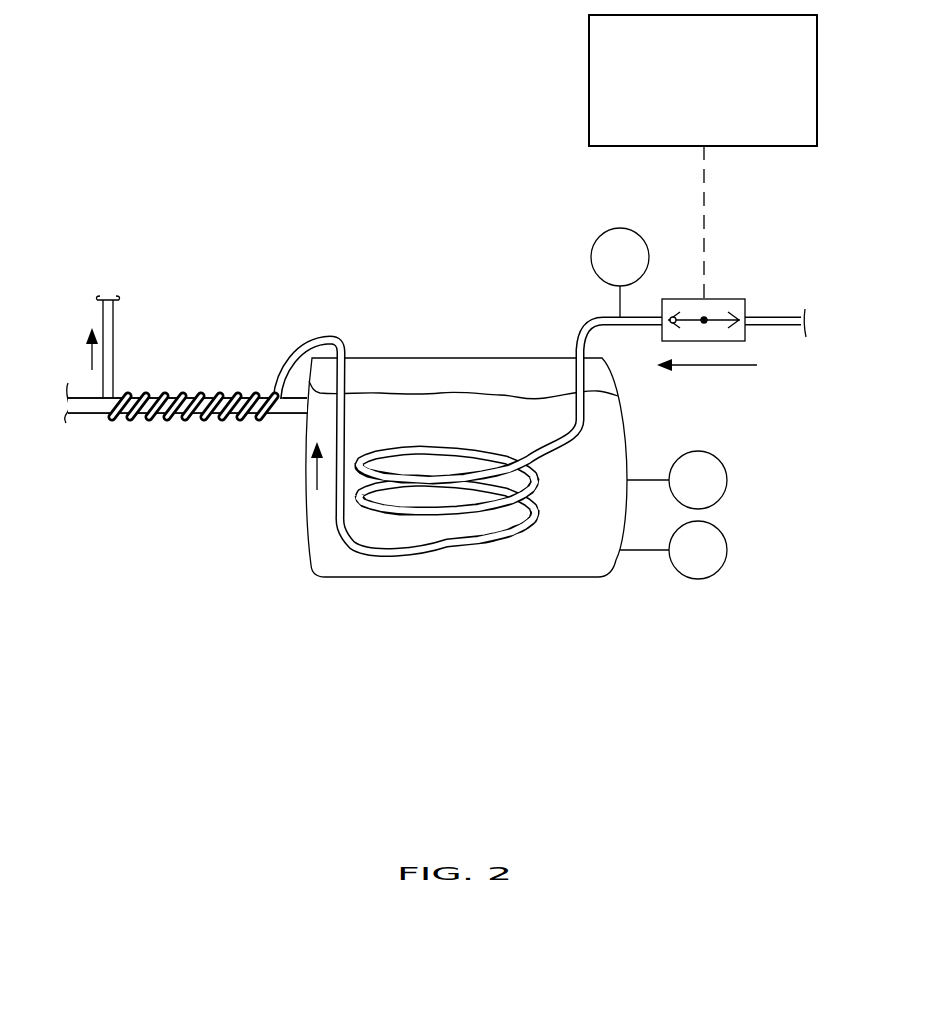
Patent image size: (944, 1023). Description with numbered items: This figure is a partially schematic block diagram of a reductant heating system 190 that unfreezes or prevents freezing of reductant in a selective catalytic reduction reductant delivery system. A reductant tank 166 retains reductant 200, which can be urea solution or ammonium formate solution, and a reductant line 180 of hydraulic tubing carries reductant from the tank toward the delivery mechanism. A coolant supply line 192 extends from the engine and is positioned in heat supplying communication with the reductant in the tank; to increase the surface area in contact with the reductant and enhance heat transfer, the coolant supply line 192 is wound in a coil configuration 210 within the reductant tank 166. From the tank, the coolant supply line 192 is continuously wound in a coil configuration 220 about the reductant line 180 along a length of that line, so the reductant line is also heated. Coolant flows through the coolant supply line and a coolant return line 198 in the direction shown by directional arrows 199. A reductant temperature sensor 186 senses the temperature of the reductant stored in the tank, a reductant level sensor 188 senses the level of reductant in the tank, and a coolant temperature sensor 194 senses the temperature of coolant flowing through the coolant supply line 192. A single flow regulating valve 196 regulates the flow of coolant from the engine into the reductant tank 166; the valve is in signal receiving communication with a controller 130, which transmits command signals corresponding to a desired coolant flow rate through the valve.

The controller 130 is at (717, 100).
The reductant heating system 190 is at (485, 238).
The reductant tank 166 is at (305, 466).
The reductant 200 is at (590, 447).
The reductant line 180 is at (90, 413).
The coolant return line 198 is at (114, 340).
The coil configuration 210 is at (447, 481).
The coolant supply line 192 is at (356, 338).
The coil configuration 220 is at (213, 368).
The flow regulating valve 196 is at (737, 299).
The coolant temperature sensor 194 is at (598, 236).
The reductant temperature sensor 186 is at (729, 480).
The reductant level sensor 188 is at (729, 549).
The directional arrows 199 is at (85, 354).